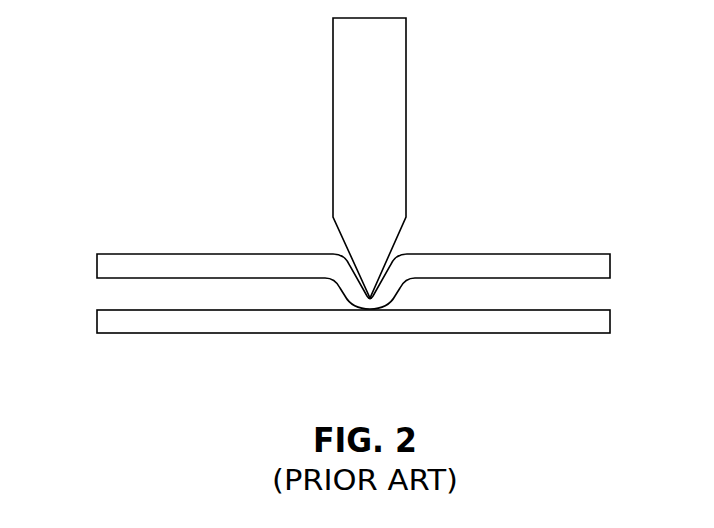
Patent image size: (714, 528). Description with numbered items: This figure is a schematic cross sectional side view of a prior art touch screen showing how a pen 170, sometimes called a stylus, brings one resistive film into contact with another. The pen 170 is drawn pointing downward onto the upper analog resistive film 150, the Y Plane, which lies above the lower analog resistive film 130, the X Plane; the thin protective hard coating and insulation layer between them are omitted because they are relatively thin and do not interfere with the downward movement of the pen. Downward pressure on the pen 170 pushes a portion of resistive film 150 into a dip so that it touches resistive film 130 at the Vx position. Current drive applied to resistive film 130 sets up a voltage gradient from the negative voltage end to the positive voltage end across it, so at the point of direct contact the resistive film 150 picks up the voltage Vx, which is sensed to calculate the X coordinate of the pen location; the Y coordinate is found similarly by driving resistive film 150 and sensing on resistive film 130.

The pen 170 is at (406, 72).
The analog resistive film 150 is at (97, 270).
The analog resistive film 130 is at (97, 323).